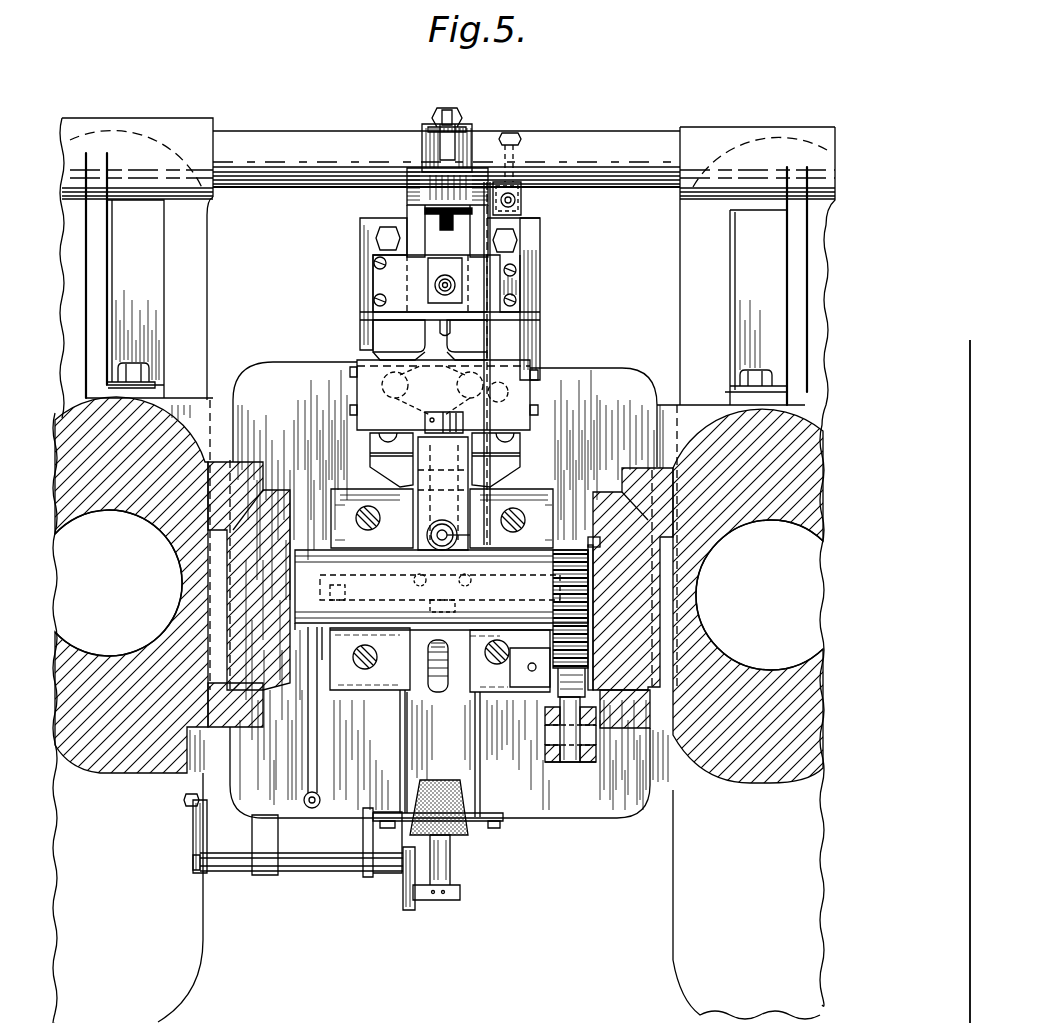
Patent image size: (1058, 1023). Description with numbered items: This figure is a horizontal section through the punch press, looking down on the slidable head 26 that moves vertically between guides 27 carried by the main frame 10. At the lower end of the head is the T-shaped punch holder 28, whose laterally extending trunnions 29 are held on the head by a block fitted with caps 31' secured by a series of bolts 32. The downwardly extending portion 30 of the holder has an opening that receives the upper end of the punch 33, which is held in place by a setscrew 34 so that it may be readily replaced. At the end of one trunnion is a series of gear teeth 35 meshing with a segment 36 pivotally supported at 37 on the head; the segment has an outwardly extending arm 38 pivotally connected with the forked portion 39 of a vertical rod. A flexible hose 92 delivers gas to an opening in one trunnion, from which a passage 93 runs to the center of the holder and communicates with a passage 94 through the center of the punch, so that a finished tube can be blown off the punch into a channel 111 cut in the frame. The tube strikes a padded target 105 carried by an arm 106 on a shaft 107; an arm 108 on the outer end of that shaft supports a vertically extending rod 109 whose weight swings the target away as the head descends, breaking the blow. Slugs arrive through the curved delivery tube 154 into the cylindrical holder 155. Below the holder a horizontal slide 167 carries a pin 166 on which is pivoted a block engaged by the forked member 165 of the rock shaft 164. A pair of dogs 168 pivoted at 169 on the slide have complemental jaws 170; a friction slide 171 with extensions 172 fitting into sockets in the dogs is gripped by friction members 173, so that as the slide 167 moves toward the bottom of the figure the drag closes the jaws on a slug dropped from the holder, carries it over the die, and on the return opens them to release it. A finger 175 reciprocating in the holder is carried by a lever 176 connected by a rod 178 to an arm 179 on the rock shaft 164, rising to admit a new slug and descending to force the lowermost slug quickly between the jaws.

The main frame 10 is at (90, 772).
The slidable head 26 is at (240, 587).
The guides 27 is at (242, 460).
The T-shaped punch holder 28 is at (441, 590).
The trunnions 29 is at (332, 545).
The downwardly extending portion 30 is at (378, 640).
The caps 31' is at (441, 742).
The bolts 32 is at (366, 510).
The punch 33 is at (440, 712).
The setscrew 34 is at (442, 695).
The gear teeth 35 is at (580, 545).
The segment 36 is at (592, 652).
The pivot 37 is at (597, 728).
The outwardly extending arm 38 is at (571, 754).
The forked portion 39 is at (551, 758).
The flexible hose 92 is at (322, 752).
The passage 93 is at (345, 580).
The passage 94 is at (437, 607).
The target 105 is at (452, 853).
The arm 106 is at (409, 892).
The shaft 107 is at (318, 860).
The arm 108 is at (196, 832).
The vertically extending rod 109 is at (189, 806).
The channel 111 is at (460, 770).
The delivery tube 154 is at (497, 420).
The cylindrical holder 155 is at (555, 623).
The rock shaft 164 is at (284, 130).
The forked member 165 is at (465, 130).
The pin 166 is at (444, 159).
The slide 167 is at (412, 335).
The dogs 168 is at (425, 430).
The pivots 169 is at (386, 388).
The jaws 170 is at (416, 579).
The slide 171 is at (462, 335).
The extensions 172 is at (408, 378).
The friction members 173 is at (428, 275).
The finger 175 is at (428, 532).
The lever 176 is at (490, 232).
The rod 178 is at (516, 200).
The arm 179 is at (498, 185).